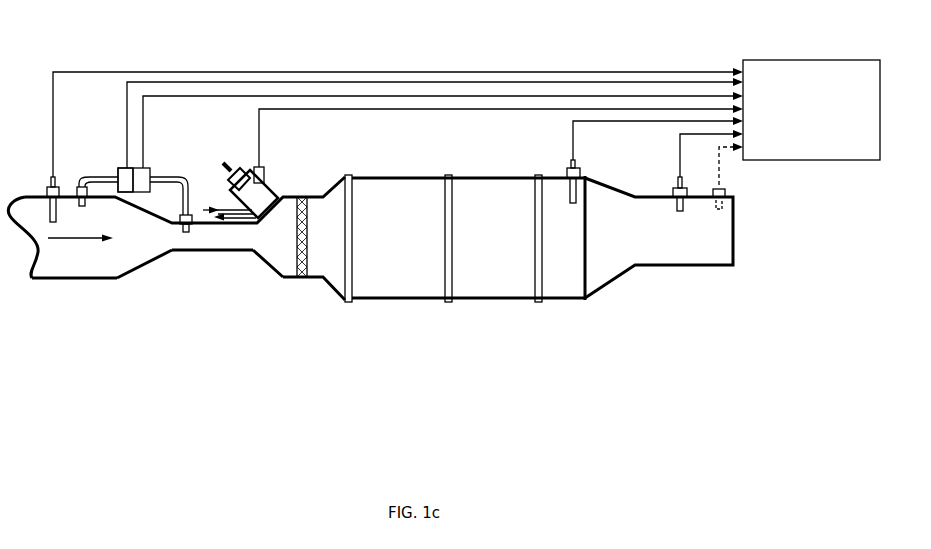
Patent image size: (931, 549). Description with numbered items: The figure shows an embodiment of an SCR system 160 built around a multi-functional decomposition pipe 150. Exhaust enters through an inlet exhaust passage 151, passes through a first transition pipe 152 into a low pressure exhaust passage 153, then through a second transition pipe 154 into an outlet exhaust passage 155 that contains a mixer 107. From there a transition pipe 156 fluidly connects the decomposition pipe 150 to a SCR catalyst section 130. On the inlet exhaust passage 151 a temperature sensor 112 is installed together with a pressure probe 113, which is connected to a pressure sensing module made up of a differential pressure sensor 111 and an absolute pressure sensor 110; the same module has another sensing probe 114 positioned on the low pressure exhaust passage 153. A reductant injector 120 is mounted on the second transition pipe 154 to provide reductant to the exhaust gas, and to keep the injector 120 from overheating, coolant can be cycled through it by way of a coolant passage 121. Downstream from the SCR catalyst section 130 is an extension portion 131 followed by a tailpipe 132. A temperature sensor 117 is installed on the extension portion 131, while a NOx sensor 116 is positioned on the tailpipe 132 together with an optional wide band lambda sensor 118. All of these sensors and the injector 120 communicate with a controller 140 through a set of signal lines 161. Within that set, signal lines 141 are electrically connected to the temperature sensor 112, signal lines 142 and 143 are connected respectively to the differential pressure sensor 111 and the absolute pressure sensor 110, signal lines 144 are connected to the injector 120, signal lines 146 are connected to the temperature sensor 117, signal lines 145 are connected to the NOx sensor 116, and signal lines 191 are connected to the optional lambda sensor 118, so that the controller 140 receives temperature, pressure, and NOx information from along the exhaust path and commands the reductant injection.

The mixer 107 is at (296, 196).
The absolute pressure sensor 110 is at (150, 168).
The differential pressure sensor 111 is at (120, 167).
The temperature sensor 112 is at (50, 185).
The pressure probe 113 is at (99, 176).
The sensing probe 114 is at (160, 176).
The NOx sensor 116 is at (674, 192).
The temperature sensor 117 is at (568, 172).
The wide band lambda sensor 118 is at (726, 192).
The reductant injector 120 is at (246, 167).
The coolant passage 121 is at (244, 207).
The SCR catalyst section 130 is at (400, 186).
The extension portion 131 is at (572, 301).
The tailpipe 132 is at (734, 256).
The controller 140 is at (815, 160).
The signal lines 141 is at (75, 72).
The signal lines 142 is at (127, 96).
The signal lines 143 is at (203, 96).
The signal lines 144 is at (259, 126).
The signal lines 145 is at (679, 164).
The signal lines 146 is at (574, 150).
The decomposition pipe 150 is at (212, 286).
The inlet exhaust passage 151 is at (75, 280).
The first transition pipe 152 is at (136, 278).
The low pressure exhaust passage 153 is at (214, 262).
The second transition pipe 154 is at (272, 277).
The outlet exhaust passage 155 is at (290, 283).
The transition pipe 156 is at (334, 296).
The SCR system 160 is at (349, 357).
The signal lines 161 is at (557, 52).
The signal lines 191 is at (720, 165).